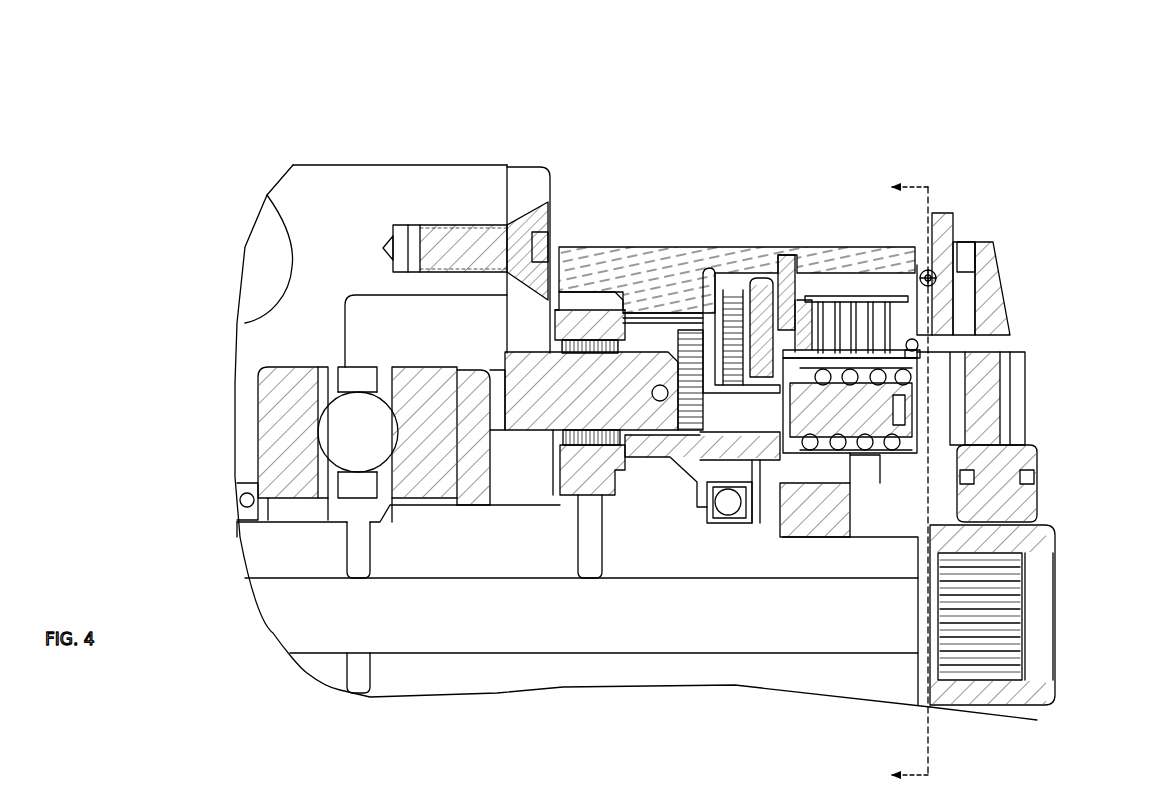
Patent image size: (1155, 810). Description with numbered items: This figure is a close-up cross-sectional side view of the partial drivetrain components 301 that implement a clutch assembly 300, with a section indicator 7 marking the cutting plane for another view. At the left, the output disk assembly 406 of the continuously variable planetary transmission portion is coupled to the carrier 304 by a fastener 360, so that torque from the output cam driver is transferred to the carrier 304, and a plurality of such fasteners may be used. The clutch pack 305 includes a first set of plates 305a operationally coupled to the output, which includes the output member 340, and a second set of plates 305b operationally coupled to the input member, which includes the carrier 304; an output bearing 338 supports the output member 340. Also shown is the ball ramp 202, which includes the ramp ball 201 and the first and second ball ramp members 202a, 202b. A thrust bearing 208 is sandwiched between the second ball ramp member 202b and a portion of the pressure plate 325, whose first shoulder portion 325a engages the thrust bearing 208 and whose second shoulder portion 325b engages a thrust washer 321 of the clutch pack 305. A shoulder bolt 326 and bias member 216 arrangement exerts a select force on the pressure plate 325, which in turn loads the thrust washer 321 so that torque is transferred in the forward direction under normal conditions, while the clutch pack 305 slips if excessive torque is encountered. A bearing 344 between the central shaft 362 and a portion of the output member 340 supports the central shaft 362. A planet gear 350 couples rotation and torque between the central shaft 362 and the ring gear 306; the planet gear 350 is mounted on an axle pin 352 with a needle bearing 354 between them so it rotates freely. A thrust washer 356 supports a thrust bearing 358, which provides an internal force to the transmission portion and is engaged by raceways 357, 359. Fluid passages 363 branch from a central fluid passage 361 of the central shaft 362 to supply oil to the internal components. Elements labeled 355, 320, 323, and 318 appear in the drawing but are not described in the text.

The clutch assembly 300 is at (932, 138).
The partial drivetrain components 301 is at (200, 172).
The section line 7 is at (899, 480).
The output disk assembly 406 is at (307, 212).
The carrier 304 is at (527, 180).
The fastener 360 is at (482, 242).
The ring gear 306 is at (652, 270).
The nut 355 is at (629, 322).
The axle pin 352 is at (507, 370).
The thrust washer 356 is at (470, 370).
The needle bearing 354 is at (563, 473).
The planet gear 350 is at (563, 488).
The raceway 359 is at (275, 408).
The thrust bearing 358 is at (353, 410).
The raceway 357 is at (433, 490).
The rotor carrier 320 is at (762, 300).
The rotor support 323 is at (778, 347).
The magnet 318 is at (790, 275).
The clutch pack 305 is at (862, 290).
The first set of plates 305a is at (808, 327).
The second set of plates 305b is at (861, 345).
The shoulder bolt 326 is at (880, 400).
The bias member 216 is at (838, 445).
The bearing 344 is at (812, 523).
The ball ramp 202 is at (925, 238).
The first ball ramp member 202a is at (920, 265).
The second ball ramp member 202b is at (945, 222).
The thrust bearing 208 is at (965, 248).
The ramp ball 201 is at (987, 305).
The first shoulder portion 325a is at (938, 280).
The pressure plate 325 is at (987, 303).
The thrust washer 321 is at (915, 342).
The second shoulder portion 325b is at (920, 355).
The output bearing 338 is at (1022, 462).
The output member 340 is at (1043, 622).
The central fluid passage 361 is at (567, 625).
The central shaft 362 is at (500, 672).
The fluid passages 363 is at (587, 550).